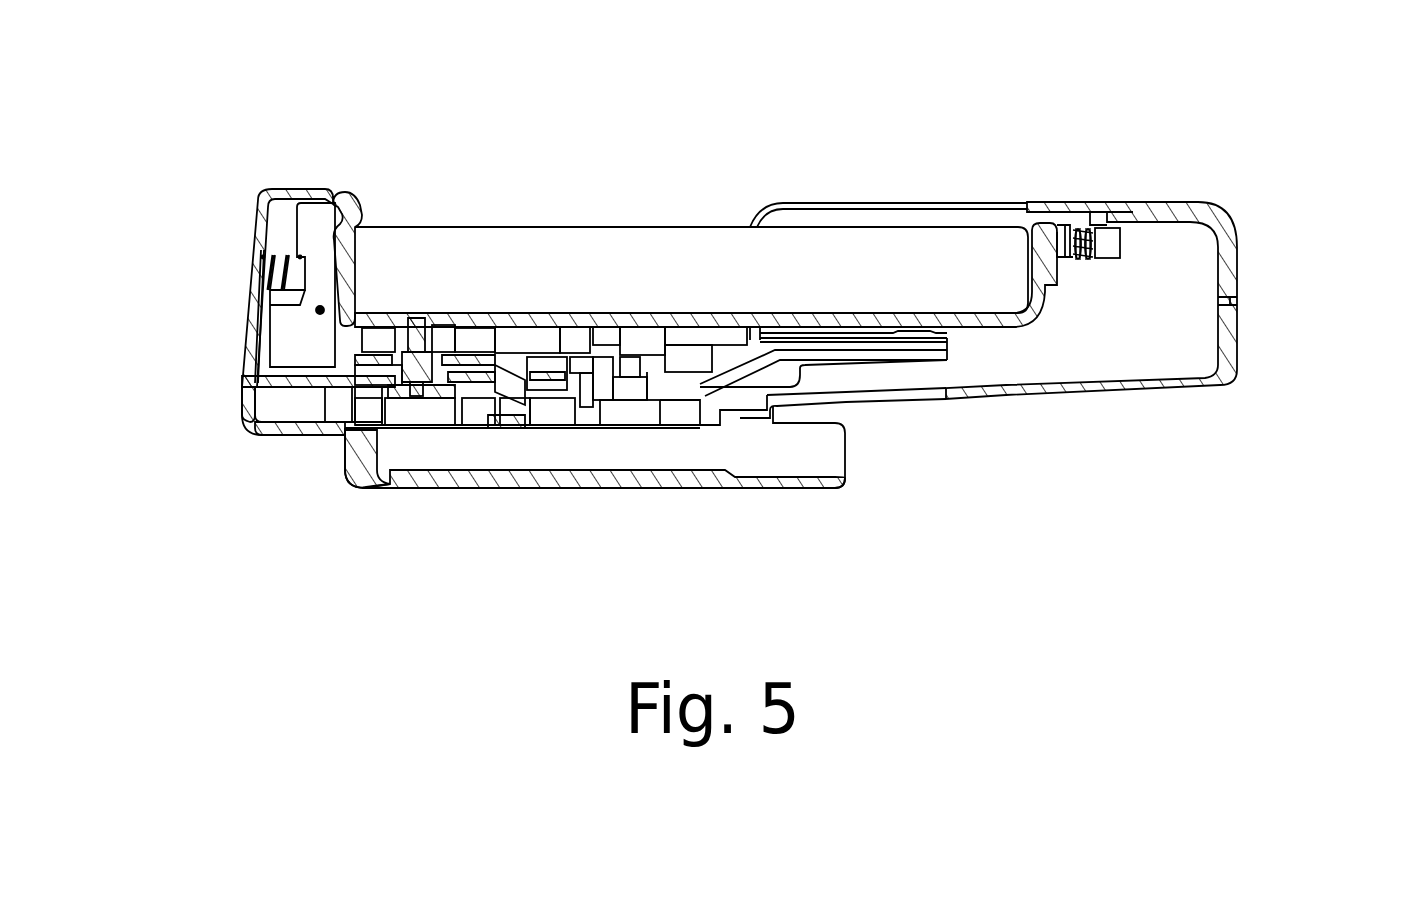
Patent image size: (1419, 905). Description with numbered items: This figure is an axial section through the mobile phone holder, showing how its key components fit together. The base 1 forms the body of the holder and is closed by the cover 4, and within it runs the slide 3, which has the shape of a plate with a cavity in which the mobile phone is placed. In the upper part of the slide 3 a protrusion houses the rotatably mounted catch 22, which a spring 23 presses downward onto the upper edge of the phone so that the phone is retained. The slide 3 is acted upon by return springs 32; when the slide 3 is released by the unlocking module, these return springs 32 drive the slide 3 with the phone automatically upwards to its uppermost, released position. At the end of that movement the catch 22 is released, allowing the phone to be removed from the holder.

The base 1 is at (1045, 392).
The slide 3 is at (683, 263).
The cover 4 is at (1117, 203).
The catch 22 is at (318, 222).
The spring 23 is at (280, 272).
The return spring 32 is at (1097, 245).